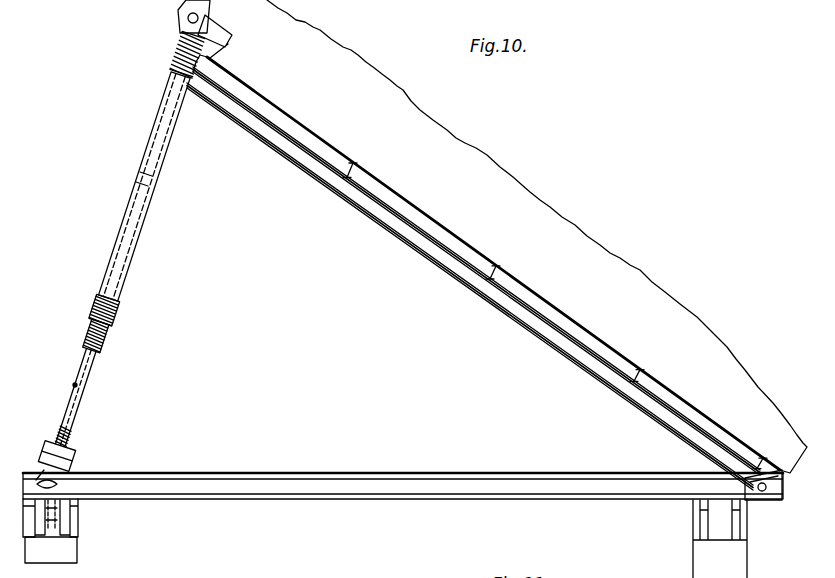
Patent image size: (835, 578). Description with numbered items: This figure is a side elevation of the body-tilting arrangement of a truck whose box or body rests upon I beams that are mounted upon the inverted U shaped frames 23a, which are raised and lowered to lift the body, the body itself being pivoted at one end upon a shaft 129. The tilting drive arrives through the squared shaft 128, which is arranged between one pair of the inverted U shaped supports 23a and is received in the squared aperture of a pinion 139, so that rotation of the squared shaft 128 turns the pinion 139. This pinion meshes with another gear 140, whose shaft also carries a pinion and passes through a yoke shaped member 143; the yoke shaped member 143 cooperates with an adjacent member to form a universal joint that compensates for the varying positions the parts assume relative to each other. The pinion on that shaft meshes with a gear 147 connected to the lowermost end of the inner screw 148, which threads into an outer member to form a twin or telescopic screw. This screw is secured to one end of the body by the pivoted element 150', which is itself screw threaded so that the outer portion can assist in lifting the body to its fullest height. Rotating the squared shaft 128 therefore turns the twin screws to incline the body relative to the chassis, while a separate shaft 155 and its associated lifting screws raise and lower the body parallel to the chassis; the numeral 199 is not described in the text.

The pivoted element 150' is at (500, 236).
The strut tube 199 is at (114, 307).
The shaft 155 is at (112, 319).
The inner screw 148 is at (95, 372).
The yoke shaped member 143 is at (70, 455).
The gear 147 is at (45, 470).
The gear 140 is at (58, 482).
The pinion 139 is at (62, 496).
The squared shaft 128 is at (76, 530).
The inverted U shaped frame 23a is at (36, 557).
The shaft 129 is at (768, 500).